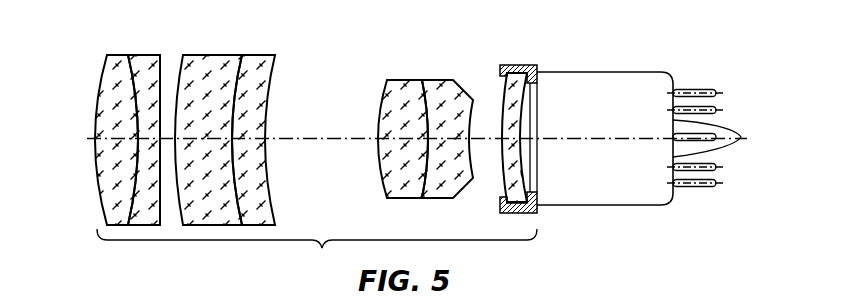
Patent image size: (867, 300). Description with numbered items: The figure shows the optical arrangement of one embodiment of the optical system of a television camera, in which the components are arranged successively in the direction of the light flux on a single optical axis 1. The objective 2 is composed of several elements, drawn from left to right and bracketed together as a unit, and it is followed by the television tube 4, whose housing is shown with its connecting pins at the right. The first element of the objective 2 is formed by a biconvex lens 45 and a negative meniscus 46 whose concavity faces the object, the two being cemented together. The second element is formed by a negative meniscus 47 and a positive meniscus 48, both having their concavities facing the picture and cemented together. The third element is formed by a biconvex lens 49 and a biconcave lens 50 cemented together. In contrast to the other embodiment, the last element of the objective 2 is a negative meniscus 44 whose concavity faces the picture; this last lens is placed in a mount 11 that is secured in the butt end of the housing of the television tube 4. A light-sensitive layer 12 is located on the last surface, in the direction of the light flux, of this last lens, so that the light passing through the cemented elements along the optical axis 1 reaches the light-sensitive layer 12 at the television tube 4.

The optical axis 1 is at (342, 145).
The objective 2 is at (317, 253).
The television tube 4 is at (587, 82).
The mount 11 is at (503, 66).
The light-sensitive layer 12 is at (523, 178).
The negative meniscus 44 is at (527, 75).
The biconvex lens 45 is at (110, 57).
The negative meniscus 46 is at (147, 57).
The negative meniscus 47 is at (220, 58).
The positive meniscus 48 is at (258, 58).
The biconvex lens 49 is at (405, 85).
The biconcave lens 50 is at (442, 85).